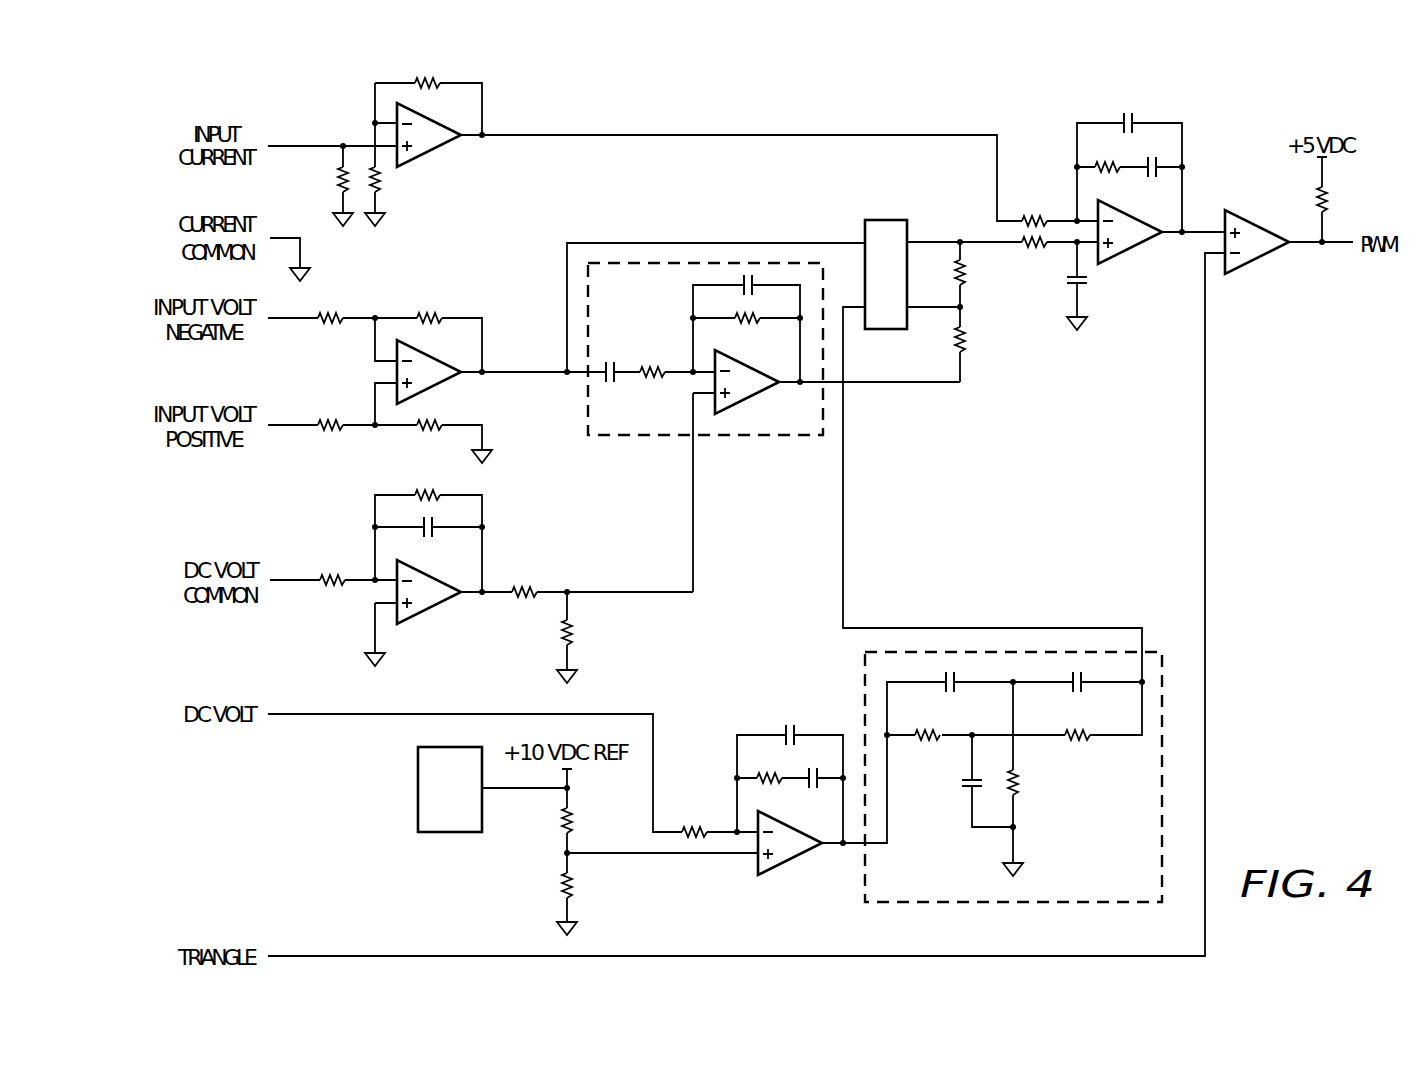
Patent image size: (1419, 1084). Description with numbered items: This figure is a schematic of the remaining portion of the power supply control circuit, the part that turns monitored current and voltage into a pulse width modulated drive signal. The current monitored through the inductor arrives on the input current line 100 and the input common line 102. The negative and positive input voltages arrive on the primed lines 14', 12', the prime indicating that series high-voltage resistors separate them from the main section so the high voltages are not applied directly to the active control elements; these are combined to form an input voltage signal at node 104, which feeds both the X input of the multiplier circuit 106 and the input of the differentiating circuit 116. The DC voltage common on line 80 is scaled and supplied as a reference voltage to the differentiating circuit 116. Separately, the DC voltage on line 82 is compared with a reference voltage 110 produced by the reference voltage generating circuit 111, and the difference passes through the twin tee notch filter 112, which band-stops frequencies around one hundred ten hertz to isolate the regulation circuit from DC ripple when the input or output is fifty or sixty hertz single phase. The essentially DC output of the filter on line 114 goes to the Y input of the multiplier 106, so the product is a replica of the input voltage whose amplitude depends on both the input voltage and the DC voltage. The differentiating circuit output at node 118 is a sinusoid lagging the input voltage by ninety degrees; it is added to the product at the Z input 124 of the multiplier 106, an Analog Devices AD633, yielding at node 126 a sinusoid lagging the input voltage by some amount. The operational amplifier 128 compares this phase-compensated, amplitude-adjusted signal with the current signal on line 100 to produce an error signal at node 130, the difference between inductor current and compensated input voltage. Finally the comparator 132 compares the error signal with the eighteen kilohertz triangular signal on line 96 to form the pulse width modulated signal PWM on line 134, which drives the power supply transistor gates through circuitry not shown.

The input current line 100 is at (300, 142).
The input common line 102 is at (285, 237).
The negative input voltage line 14' is at (376, 344).
The positive input voltage line 12' is at (380, 433).
The DC common voltage line 80 is at (298, 583).
The DC voltage line 82 is at (302, 717).
The triangular signal line 96 is at (302, 953).
The input voltage signal node 104 is at (713, 242).
The multiplier circuit 106 is at (883, 218).
The reference voltage 110 is at (592, 767).
The reference voltage generating circuit 111 is at (418, 789).
The twin tee notch filter 112 is at (865, 877).
The notch filter output line 114 is at (845, 508).
The differentiating circuit 116 is at (752, 438).
The differentiating circuit output node 118 is at (887, 383).
The Z input 124 is at (935, 310).
The phase-compensated signal node 126 is at (990, 243).
The operational amplifier 128 is at (1133, 250).
The error signal node 130 is at (1203, 227).
The comparator 132 is at (1258, 260).
The PWM line 134 is at (1338, 248).